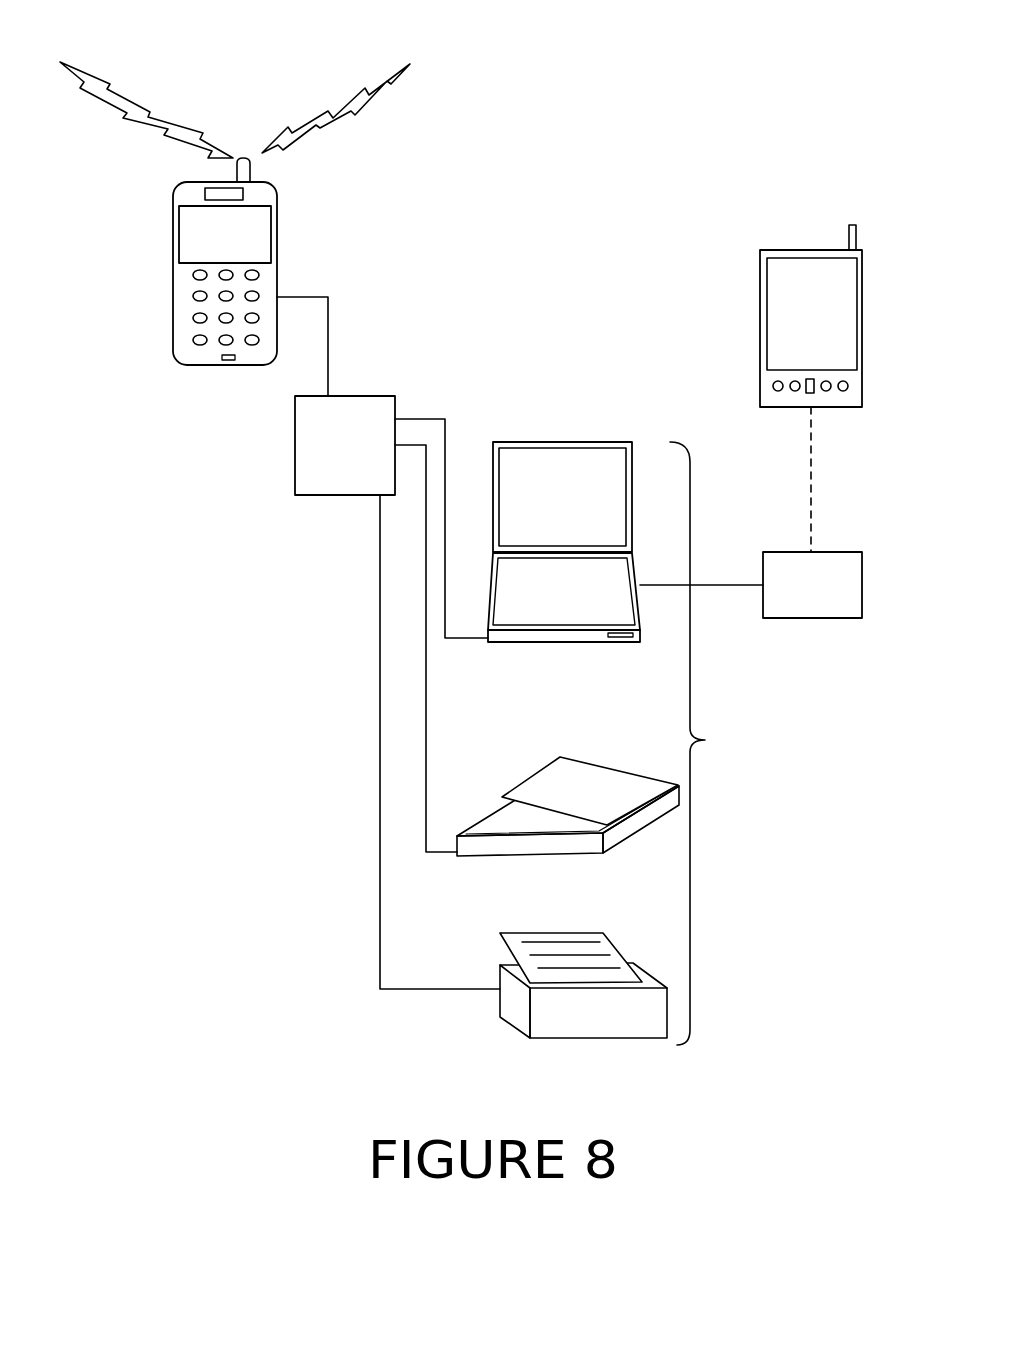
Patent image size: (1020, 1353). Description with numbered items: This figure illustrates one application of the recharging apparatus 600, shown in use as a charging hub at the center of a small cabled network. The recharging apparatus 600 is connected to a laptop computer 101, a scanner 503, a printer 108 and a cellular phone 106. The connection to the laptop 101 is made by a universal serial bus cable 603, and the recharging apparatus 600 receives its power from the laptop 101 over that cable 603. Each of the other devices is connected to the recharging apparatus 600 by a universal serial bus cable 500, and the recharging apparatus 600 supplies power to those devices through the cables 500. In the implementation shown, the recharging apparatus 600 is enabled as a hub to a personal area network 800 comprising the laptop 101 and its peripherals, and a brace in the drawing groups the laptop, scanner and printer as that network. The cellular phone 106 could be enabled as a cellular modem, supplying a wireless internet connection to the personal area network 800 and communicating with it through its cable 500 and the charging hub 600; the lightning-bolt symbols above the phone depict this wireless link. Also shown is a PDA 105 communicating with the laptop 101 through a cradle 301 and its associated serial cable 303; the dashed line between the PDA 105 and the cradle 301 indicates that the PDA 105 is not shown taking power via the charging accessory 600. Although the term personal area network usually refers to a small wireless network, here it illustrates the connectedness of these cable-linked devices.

The cellular phone 106 is at (237, 258).
The PDA 105 is at (823, 341).
The recharging apparatus 600 is at (359, 457).
The universal serial bus cable 500 is at (310, 297).
The universal serial bus cable 603 is at (420, 419).
The laptop computer 101 is at (575, 510).
The cradle 301 is at (827, 595).
The serial cable 303 is at (729, 585).
The scanner 503 is at (556, 856).
The printer 108 is at (613, 1025).
The personal area network 800 is at (707, 743).